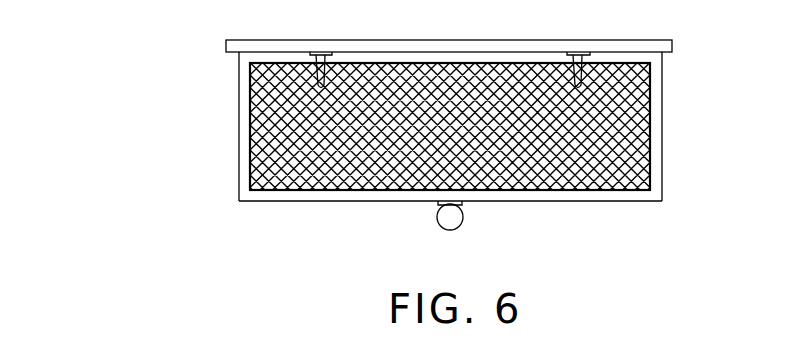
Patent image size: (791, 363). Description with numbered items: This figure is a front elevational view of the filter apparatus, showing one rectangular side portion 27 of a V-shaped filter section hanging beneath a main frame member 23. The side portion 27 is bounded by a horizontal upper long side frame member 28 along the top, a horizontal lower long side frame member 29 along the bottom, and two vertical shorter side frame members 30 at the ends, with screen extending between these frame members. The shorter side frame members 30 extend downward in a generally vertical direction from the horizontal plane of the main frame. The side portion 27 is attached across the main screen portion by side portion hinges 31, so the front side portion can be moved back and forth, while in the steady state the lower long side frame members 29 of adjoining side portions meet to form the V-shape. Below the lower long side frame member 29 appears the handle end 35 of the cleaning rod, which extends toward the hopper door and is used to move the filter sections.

The main frame member 23 is at (226, 45).
The side portion 27 is at (137, 133).
The upper long side frame member 28 is at (258, 53).
The lower long side frame member 29 is at (275, 201).
The shorter side frame member 30 is at (238, 122).
The side portion hinge 31 is at (264, 61).
The handle end 35 is at (438, 218).